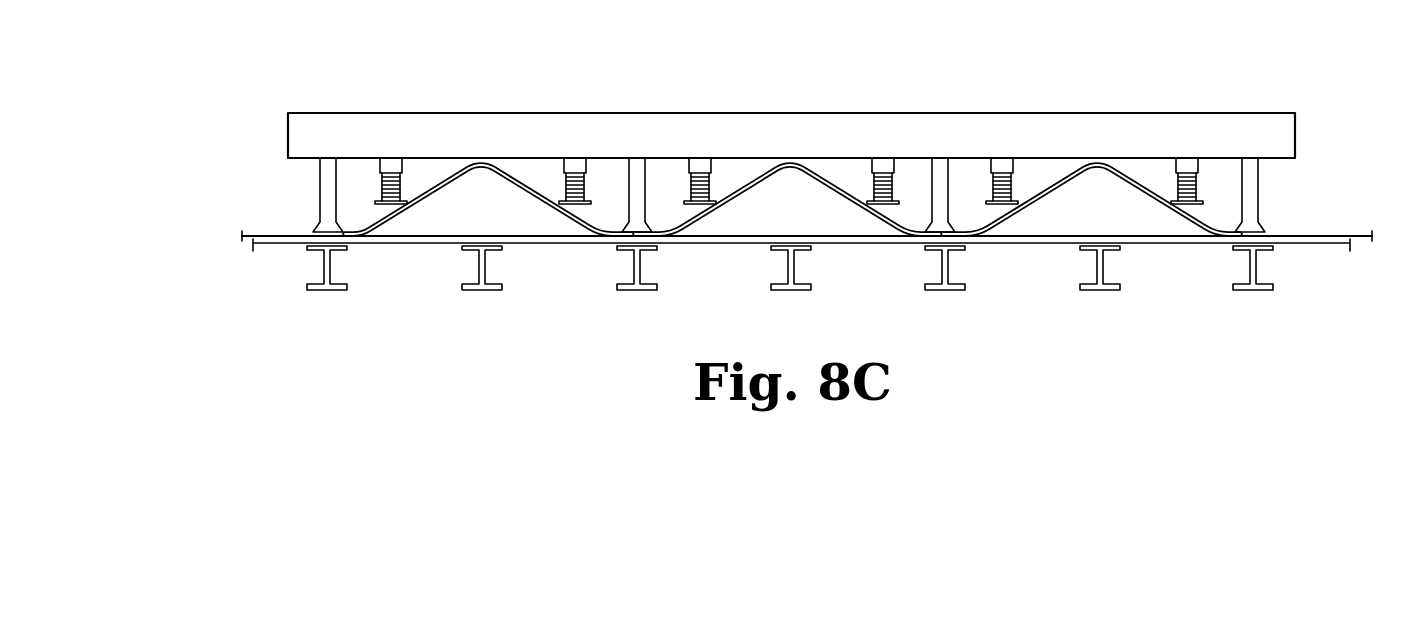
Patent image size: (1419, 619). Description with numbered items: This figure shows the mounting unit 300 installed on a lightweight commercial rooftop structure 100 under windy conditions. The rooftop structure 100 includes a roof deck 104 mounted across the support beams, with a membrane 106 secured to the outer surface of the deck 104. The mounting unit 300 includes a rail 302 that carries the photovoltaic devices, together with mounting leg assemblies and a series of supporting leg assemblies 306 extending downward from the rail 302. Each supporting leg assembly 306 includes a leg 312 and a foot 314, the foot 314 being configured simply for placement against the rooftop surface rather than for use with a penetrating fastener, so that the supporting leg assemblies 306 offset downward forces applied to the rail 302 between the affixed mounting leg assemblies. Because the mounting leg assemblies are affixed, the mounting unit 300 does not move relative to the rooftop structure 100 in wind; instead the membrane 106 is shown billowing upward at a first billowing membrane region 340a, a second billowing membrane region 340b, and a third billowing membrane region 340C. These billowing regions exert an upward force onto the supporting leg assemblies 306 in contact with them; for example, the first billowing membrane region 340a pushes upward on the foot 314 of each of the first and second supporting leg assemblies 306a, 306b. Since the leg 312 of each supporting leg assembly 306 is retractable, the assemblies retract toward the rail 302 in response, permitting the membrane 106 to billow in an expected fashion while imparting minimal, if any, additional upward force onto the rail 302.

The rooftop structure 100 is at (242, 263).
The roof deck 104 is at (284, 256).
The membrane 106 is at (275, 232).
The mounting unit 300 is at (802, 96).
The rail 302 is at (928, 117).
The supporting leg assembly 306 is at (716, 177).
The first supporting leg assembly 306a is at (370, 177).
The second supporting leg assembly 306b is at (600, 177).
The leg 312 is at (410, 182).
The foot 314 is at (395, 204).
The first billowing membrane region 340a is at (437, 190).
The second billowing membrane region 340b is at (733, 198).
The third billowing membrane region 340C is at (1045, 196).